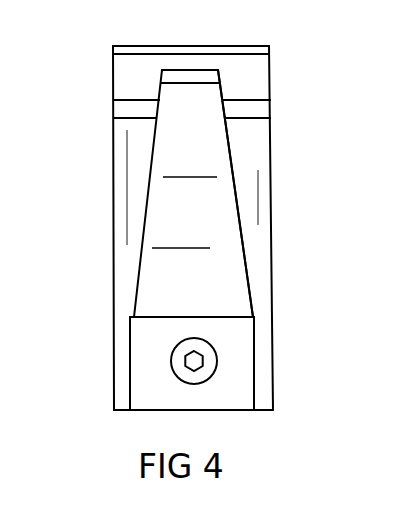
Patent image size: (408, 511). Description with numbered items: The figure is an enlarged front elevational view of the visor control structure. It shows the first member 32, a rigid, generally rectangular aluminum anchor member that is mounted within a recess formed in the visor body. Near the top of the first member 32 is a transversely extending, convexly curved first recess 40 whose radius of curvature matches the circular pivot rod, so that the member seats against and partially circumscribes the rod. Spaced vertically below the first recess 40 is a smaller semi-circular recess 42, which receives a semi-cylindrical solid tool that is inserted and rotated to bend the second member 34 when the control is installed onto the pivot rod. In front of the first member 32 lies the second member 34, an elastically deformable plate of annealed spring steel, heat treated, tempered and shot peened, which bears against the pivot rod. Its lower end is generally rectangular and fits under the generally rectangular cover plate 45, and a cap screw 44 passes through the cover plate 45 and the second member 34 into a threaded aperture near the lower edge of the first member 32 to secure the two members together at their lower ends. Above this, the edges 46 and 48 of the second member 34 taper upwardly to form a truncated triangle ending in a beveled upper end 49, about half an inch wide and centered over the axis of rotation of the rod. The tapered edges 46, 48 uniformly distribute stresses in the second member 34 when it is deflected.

The first member 32 is at (273, 287).
The first recess 40 is at (250, 71).
The semi-circular recess 42 is at (255, 108).
The second member 34 is at (233, 168).
The beveled upper end 49 is at (195, 70).
The edge 48 is at (243, 240).
The edge 46 is at (160, 248).
The cover plate 45 is at (223, 388).
The cap screw 44 is at (201, 350).